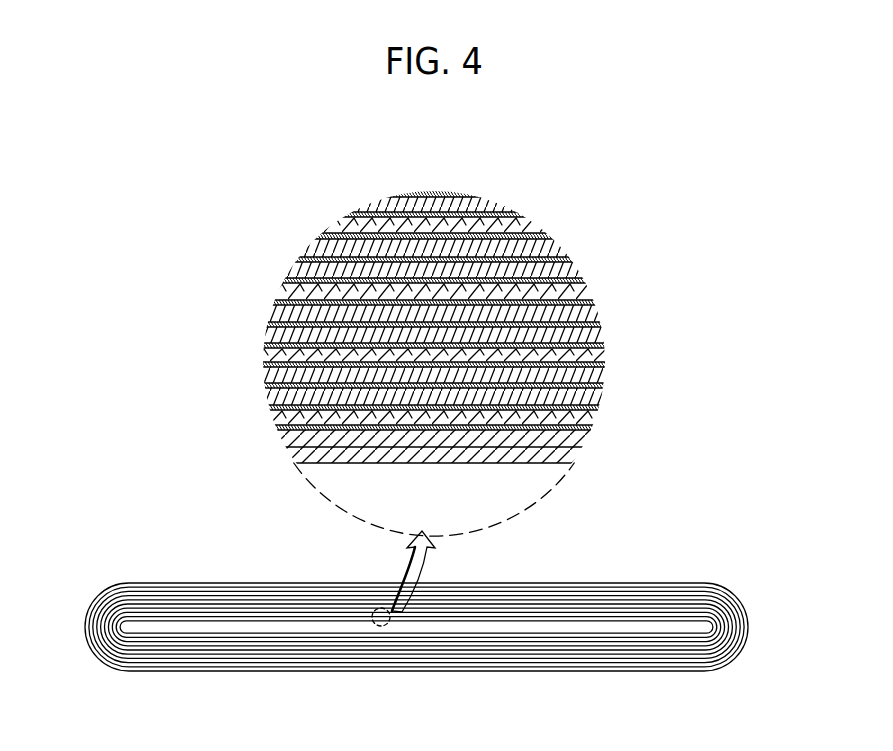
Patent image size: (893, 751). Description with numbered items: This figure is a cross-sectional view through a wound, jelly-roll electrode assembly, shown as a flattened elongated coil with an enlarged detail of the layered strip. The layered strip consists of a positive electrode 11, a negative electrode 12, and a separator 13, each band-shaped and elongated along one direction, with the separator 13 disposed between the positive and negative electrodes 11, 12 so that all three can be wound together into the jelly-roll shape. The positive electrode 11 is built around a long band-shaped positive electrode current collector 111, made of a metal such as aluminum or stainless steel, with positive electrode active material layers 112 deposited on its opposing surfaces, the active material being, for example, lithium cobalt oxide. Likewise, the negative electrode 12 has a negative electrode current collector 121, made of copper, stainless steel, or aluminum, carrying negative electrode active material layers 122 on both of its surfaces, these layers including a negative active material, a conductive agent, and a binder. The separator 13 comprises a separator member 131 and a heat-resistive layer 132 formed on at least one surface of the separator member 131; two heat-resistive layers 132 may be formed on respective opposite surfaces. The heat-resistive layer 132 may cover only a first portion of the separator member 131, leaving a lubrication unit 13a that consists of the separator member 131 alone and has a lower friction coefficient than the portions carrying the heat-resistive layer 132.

The positive electrode 11 is at (196, 345).
The positive electrode current collector 111 is at (262, 386).
The positive electrode active material layer 112 is at (262, 373).
The negative electrode 12 is at (667, 282).
The negative electrode current collector 121 is at (598, 325).
The negative electrode active material layer 122 is at (592, 313).
The separator 13 is at (664, 392).
The separator member 131 is at (588, 427).
The heat-resistive layer 132 is at (593, 412).
The lubrication unit 13a is at (512, 455).